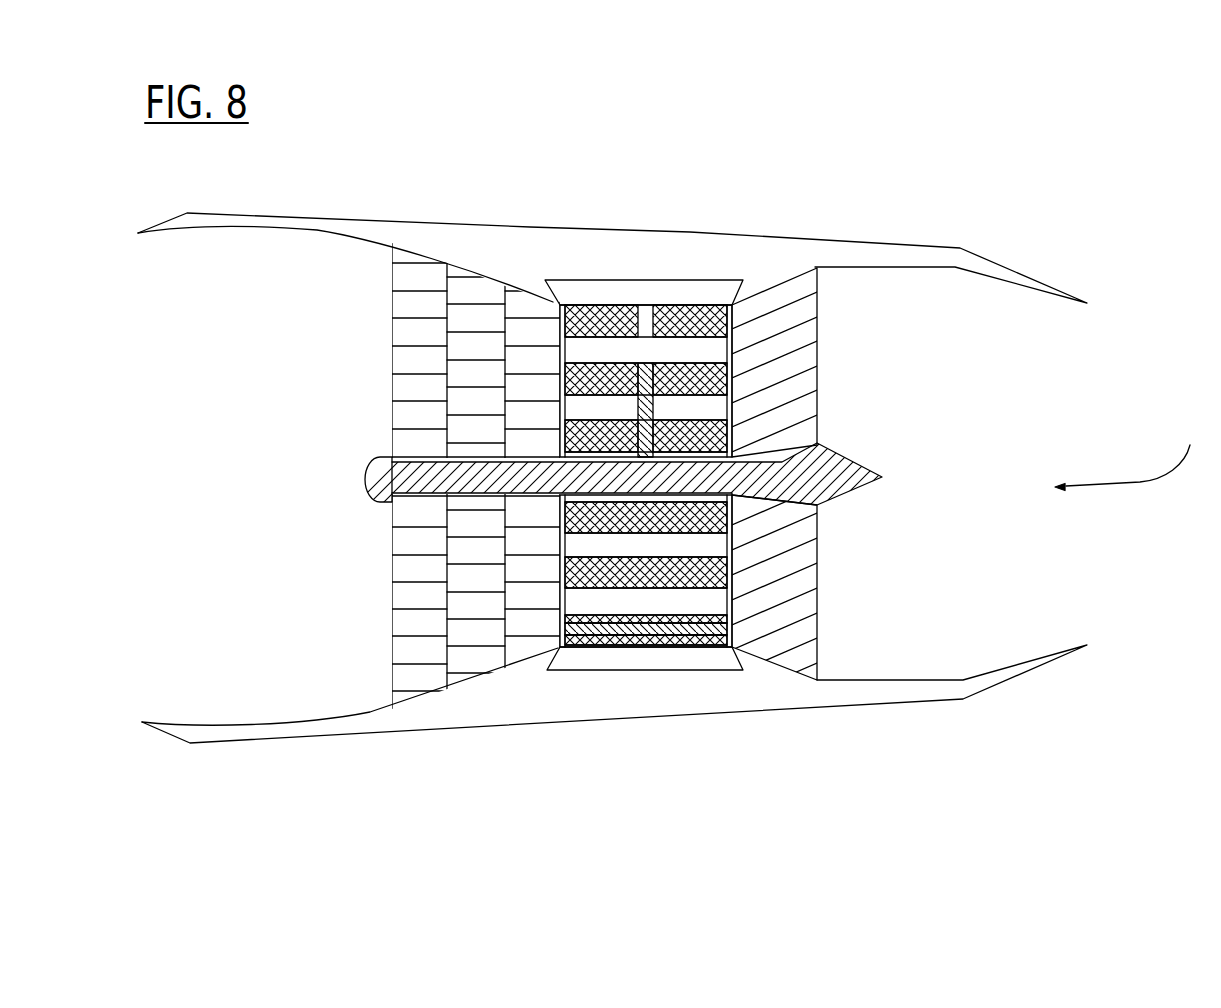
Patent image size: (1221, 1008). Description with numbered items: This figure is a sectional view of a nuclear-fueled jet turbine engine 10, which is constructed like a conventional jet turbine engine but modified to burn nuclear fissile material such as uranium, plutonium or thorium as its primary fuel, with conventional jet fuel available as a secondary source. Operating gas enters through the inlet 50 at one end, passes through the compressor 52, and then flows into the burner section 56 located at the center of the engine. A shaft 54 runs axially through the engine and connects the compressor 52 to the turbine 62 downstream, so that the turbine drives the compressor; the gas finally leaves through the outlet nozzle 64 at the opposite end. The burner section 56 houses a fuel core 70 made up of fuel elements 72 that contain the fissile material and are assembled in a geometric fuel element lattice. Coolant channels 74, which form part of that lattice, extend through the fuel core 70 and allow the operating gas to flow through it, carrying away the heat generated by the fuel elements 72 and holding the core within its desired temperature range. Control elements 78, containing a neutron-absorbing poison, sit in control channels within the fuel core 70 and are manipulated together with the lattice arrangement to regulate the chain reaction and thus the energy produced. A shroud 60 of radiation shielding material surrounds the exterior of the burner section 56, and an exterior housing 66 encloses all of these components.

The engine 10 is at (593, 97).
The inlet 50 is at (139, 389).
The compressor 52 is at (417, 594).
The shaft 54 is at (355, 490).
The burner section 56 is at (548, 272).
The shroud 60 is at (692, 664).
The turbine 62 is at (786, 315).
The outlet nozzle 64 is at (1127, 452).
The exterior housing 66 is at (390, 214).
The fuel core 70 is at (741, 592).
The fuel elements 72 is at (638, 603).
The coolant channels 74 is at (584, 602).
The control elements 78 is at (645, 356).